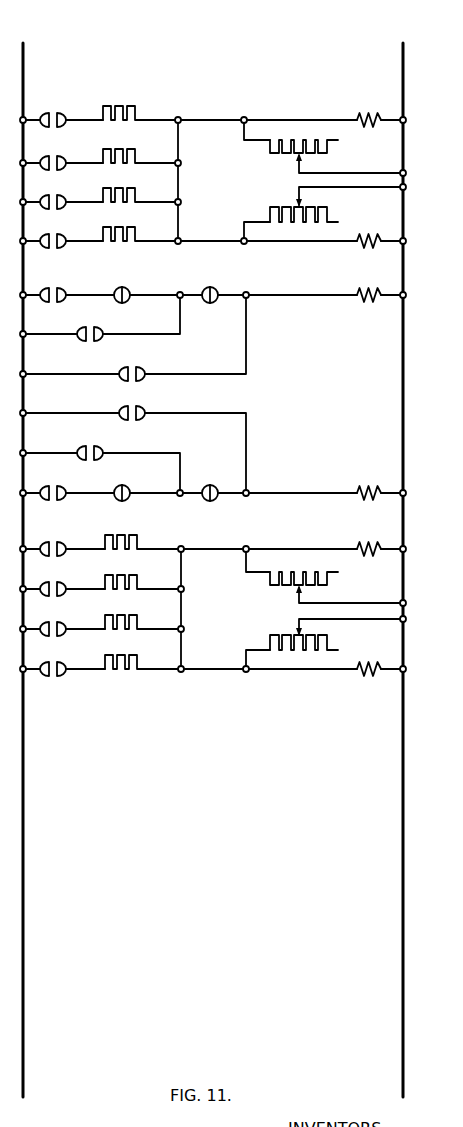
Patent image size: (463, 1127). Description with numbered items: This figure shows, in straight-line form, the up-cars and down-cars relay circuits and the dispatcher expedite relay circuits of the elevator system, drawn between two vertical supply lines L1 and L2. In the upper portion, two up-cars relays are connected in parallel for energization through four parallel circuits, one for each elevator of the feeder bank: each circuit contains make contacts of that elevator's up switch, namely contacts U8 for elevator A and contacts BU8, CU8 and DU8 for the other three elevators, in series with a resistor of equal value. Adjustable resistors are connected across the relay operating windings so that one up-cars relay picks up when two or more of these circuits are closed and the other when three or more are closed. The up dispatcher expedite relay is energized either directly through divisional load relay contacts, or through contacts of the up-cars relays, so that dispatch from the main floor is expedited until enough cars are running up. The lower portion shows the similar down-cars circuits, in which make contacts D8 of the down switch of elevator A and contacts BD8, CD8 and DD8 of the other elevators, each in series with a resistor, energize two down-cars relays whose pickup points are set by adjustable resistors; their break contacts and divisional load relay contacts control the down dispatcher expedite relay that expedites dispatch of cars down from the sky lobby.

The supply line L1 is at (24, 58).
The supply line L2 is at (402, 62).
The make contacts of the up switch U8 is at (63, 112).
The make contacts of the up switch BU8 is at (70, 147).
The make contacts of the up switch CU8 is at (70, 188).
The make contacts of the up switch DU8 is at (70, 228).
The make contacts of the down switch D8 is at (68, 533).
The make contacts of the down switch BD8 is at (70, 575).
The make contacts of the down switch CD8 is at (70, 615).
The make contacts of the down switch DD8 is at (70, 655).